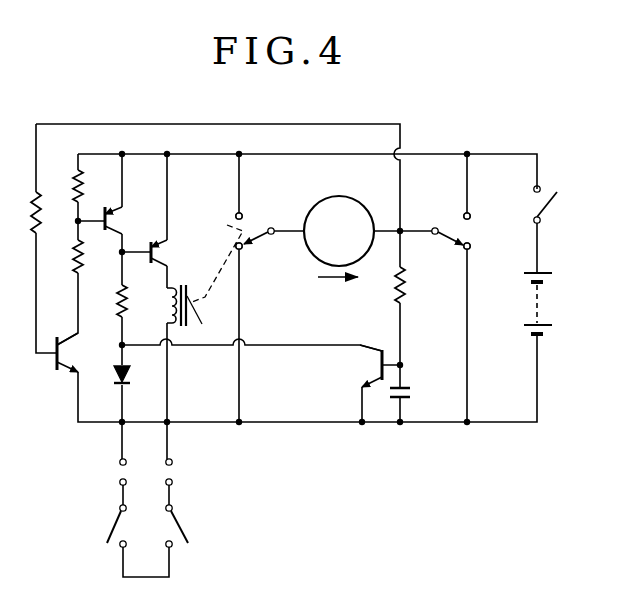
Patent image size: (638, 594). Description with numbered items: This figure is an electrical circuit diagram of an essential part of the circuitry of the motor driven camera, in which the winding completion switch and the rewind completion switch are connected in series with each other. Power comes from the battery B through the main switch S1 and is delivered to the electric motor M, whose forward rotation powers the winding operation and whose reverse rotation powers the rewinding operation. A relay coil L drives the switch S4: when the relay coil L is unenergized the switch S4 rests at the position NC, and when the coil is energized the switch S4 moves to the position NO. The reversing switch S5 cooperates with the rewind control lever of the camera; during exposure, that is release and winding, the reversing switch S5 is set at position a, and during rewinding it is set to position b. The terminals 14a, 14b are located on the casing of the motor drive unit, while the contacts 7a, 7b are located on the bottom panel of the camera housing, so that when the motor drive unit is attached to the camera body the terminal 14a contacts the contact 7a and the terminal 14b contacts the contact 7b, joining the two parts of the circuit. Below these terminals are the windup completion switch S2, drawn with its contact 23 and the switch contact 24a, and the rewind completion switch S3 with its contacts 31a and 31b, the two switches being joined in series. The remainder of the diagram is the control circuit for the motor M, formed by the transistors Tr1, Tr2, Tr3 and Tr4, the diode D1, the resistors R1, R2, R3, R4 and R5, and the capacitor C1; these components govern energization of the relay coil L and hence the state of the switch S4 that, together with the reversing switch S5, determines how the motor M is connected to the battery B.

The resistor R1 is at (48, 212).
The resistor R2 is at (90, 188).
The resistor R3 is at (90, 258).
The resistor R4 is at (133, 303).
The resistor R5 is at (412, 286).
The transistor Tr1 is at (80, 352).
The transistor Tr2 is at (121, 224).
The transistor Tr3 is at (167, 255).
The transistor Tr4 is at (362, 366).
The diode D1 is at (134, 379).
The relay coil L is at (205, 283).
The capacitor C1 is at (410, 395).
The battery B is at (541, 303).
The electric motor M is at (339, 236).
The main switch S1 is at (554, 204).
The windup completion switch S2 is at (186, 532).
The rewind completion switch S3 is at (109, 532).
The relay-driven switch S4 is at (255, 227).
The reversing switch S5 is at (457, 232).
The normally open position NO is at (225, 215).
The normally closed position NC is at (254, 255).
The switch position a is at (476, 246).
The switch position b is at (477, 215).
The terminal 14a is at (188, 463).
The terminal 14b is at (106, 463).
The contact 7a is at (182, 483).
The contact 7b is at (112, 483).
The switch contact 31a is at (120, 548).
The switch contact 31b is at (119, 508).
The switch contact 23 is at (173, 508).
The switch contact 24a is at (172, 548).